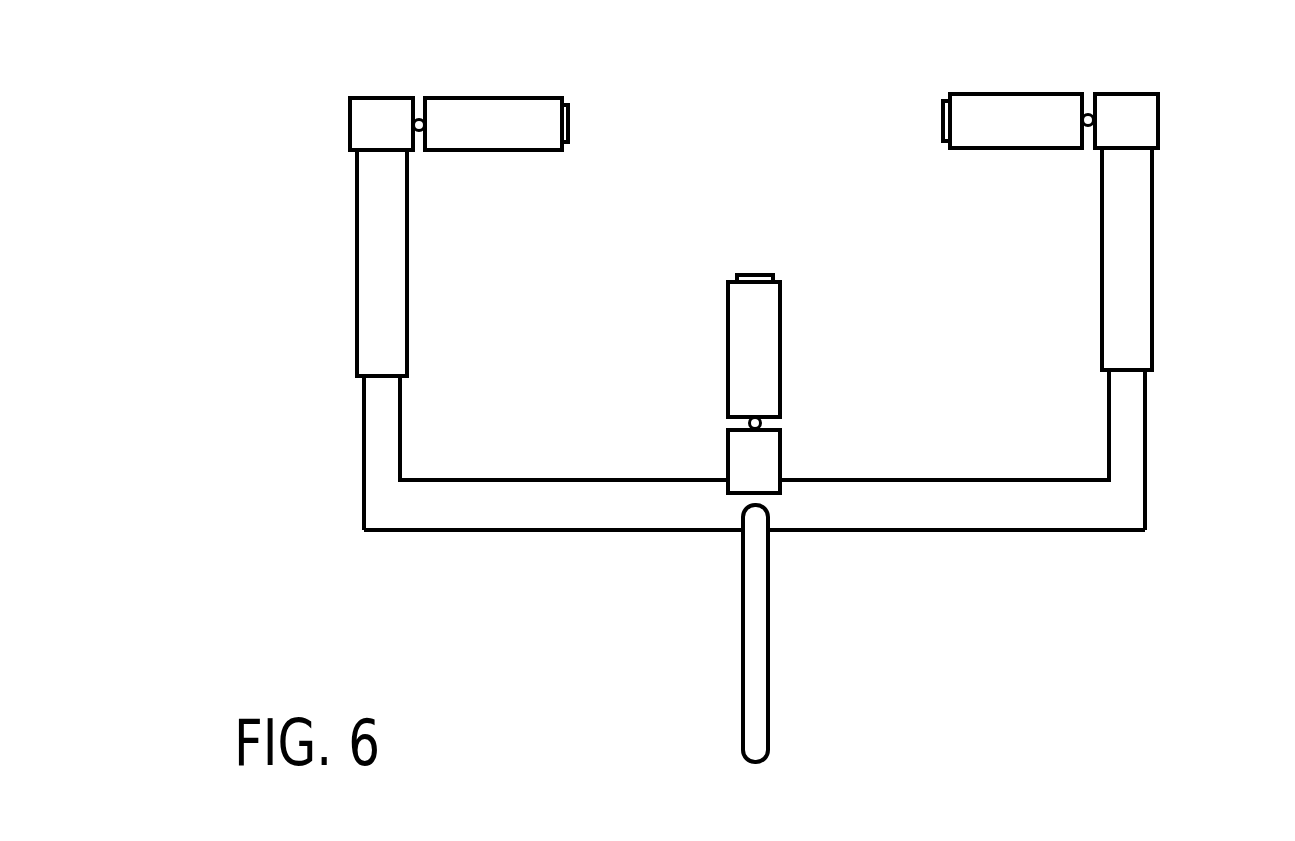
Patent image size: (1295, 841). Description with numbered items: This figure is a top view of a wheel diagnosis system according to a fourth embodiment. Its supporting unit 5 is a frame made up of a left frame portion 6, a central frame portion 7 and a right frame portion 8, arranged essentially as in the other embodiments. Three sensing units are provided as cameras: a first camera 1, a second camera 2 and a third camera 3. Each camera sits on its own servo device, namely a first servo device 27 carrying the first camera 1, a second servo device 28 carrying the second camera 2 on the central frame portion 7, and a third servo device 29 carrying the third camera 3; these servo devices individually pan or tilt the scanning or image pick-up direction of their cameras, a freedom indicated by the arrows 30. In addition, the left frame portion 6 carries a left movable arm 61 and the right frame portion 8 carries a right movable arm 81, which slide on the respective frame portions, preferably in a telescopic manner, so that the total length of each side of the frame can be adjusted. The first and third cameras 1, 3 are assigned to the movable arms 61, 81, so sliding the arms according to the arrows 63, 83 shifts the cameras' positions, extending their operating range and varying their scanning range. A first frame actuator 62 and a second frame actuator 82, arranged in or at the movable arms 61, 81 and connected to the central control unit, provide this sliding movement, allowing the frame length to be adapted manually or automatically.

The first camera 1 is at (493, 97).
The second camera 2 is at (717, 260).
The third camera 3 is at (912, 157).
The supporting unit 5 is at (762, 510).
The left frame portion 6 is at (364, 460).
The central frame portion 7 is at (537, 533).
The right frame portion 8 is at (1145, 460).
The first servo device 27 is at (385, 97).
The second servo device 28 is at (780, 454).
The third servo device 29 is at (1124, 93).
The arrows 30 is at (598, 78).
The left movable arm 61 is at (370, 230).
The first frame actuator 62 is at (343, 305).
The arrow 63 is at (433, 232).
The right movable arm 81 is at (1140, 248).
The second frame actuator 82 is at (1153, 298).
The arrow 83 is at (1076, 225).